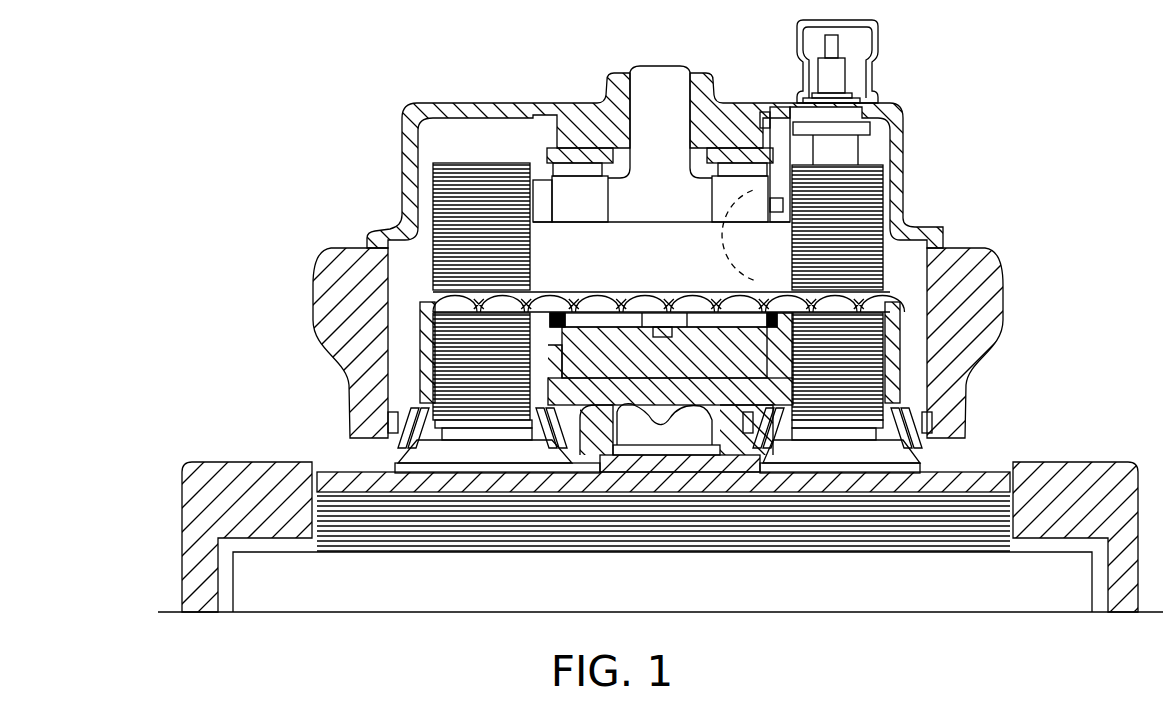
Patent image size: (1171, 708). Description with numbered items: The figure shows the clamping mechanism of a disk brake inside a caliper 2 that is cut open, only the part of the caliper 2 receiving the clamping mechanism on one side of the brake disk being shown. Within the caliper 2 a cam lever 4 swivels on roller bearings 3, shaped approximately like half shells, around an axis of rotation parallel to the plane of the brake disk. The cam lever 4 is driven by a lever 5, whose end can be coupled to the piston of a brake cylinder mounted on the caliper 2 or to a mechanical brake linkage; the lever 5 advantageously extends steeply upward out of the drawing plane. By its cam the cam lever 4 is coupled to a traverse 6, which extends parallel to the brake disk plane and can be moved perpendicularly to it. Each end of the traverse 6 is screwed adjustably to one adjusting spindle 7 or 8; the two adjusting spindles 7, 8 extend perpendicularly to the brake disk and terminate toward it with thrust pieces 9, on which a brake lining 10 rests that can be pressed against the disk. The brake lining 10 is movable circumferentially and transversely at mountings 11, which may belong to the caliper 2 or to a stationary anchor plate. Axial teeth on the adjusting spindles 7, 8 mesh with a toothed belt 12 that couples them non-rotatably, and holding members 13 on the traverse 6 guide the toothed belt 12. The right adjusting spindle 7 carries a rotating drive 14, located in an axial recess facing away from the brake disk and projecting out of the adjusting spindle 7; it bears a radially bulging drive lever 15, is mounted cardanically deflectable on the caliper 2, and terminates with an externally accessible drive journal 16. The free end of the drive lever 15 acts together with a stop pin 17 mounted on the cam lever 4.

The caliper 2 is at (327, 276).
The roller bearings 3 is at (580, 167).
The cam lever 4 is at (606, 250).
The lever 5 is at (641, 74).
The traverse 6 is at (663, 392).
The adjusting spindle 7 is at (880, 173).
The adjusting spindle 8 is at (455, 195).
The thrust pieces 9 is at (470, 450).
The brake lining 10 is at (393, 555).
The mountings 11 is at (237, 462).
The toothed belt 12 is at (893, 300).
The holding members 13 is at (547, 287).
The rotating drive 14 is at (870, 143).
The drive lever 15 is at (797, 128).
The drive journal 16 is at (833, 73).
The stop pin 17 is at (780, 150).